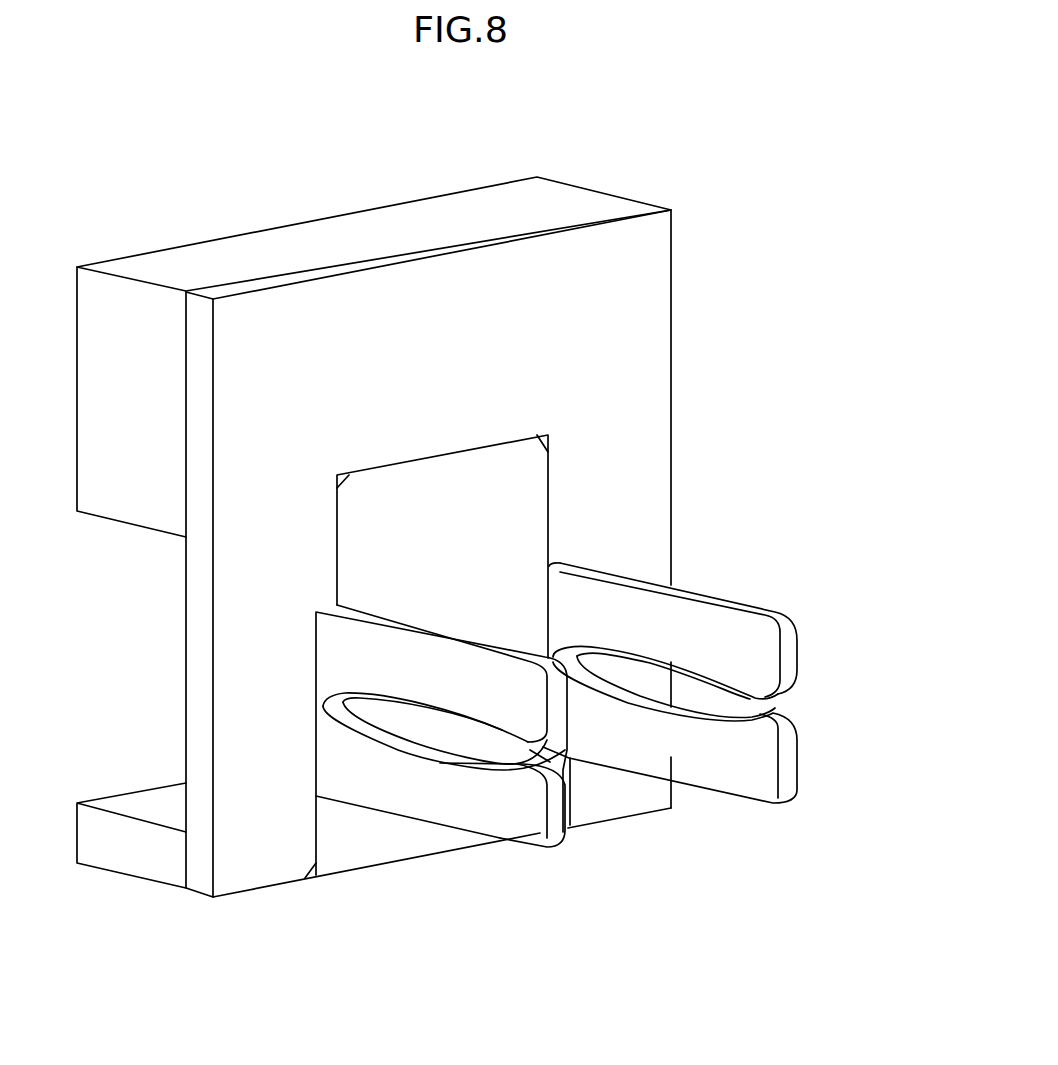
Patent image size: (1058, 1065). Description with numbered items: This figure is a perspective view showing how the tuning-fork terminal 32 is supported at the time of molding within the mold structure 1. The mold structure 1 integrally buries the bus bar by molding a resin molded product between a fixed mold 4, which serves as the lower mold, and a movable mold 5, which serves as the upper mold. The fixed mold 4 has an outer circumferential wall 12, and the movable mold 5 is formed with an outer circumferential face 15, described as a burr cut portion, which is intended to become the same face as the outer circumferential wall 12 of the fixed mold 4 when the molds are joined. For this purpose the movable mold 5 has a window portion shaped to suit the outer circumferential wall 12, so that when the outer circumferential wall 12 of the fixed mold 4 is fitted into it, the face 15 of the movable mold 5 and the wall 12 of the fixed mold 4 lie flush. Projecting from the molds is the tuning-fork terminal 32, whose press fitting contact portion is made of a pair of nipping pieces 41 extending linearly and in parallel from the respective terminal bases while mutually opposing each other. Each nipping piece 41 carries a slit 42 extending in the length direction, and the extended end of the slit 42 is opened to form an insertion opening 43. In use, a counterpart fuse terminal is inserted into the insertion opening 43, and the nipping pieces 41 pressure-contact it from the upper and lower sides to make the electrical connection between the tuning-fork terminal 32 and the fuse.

The mold structure 1 is at (730, 174).
The movable mold 5 is at (698, 348).
The outer circumferential face 15 is at (650, 423).
The outer circumferential wall 12 is at (500, 523).
The fixed mold 4 is at (412, 866).
The tuning-fork terminal 32 is at (740, 580).
The nipping pieces 41 is at (753, 607).
The slit 42 is at (718, 700).
The insertion opening 43 is at (773, 705).